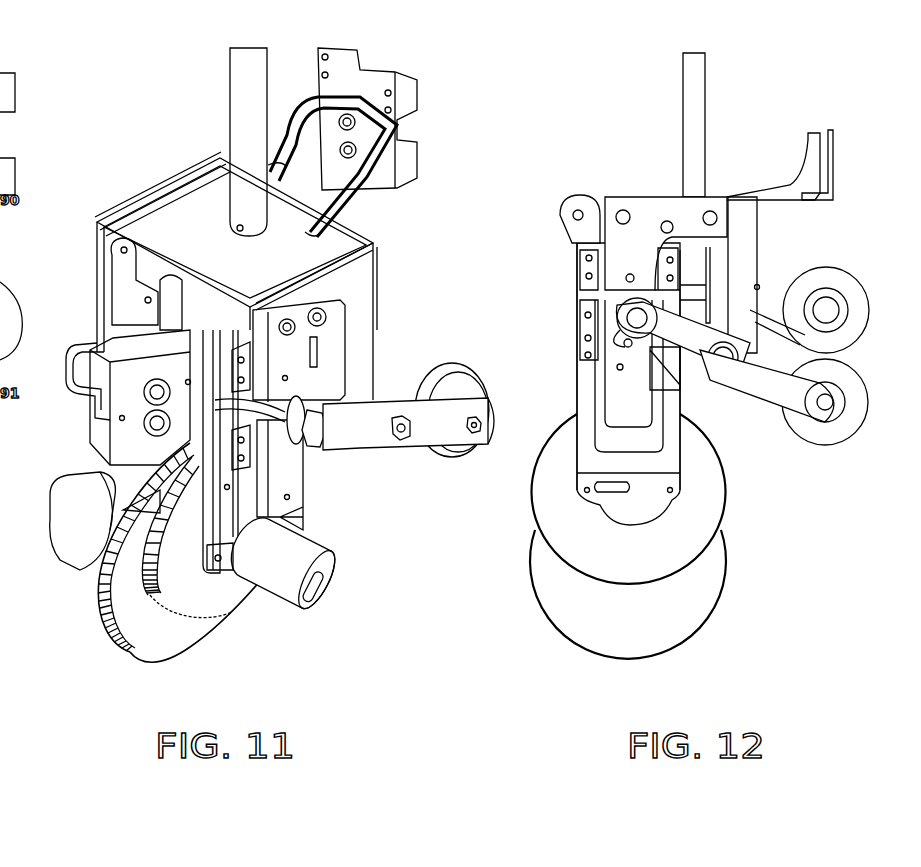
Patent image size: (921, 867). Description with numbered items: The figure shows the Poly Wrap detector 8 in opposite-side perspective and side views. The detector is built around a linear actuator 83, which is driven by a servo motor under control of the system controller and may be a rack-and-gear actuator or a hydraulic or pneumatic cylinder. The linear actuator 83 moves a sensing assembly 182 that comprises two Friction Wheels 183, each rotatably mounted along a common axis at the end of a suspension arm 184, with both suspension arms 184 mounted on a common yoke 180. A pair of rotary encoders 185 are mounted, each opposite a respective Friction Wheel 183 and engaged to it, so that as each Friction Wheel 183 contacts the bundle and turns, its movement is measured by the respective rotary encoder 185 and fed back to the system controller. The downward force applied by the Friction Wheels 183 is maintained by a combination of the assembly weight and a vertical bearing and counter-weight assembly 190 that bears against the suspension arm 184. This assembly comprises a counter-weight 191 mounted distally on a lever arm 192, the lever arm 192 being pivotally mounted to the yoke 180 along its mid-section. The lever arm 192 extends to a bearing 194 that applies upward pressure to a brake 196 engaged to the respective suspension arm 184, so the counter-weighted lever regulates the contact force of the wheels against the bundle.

In FIG. 11, the Poly Wrap detector 8 is at (165, 153).
In FIG. 12, the Poly Wrap detector 8 is at (585, 158).
In FIG. 11, the linear actuator 83 is at (235, 125).
In FIG. 12, the linear actuator 83 is at (683, 155).
In FIG. 11, the yoke 180 is at (221, 362).
In FIG. 12, the yoke 180 is at (696, 241).
In FIG. 11, the sensing assembly 182 is at (81, 653).
In FIG. 12, the sensing assembly 182 is at (527, 629).
In FIG. 11, the Friction Wheel 183 is at (100, 600).
In FIG. 12, the Friction Wheel 183 is at (705, 497).
In FIG. 11, the suspension arm 184 is at (92, 433).
In FIG. 12, the suspension arm 184 is at (578, 392).
In FIG. 11, the rotary encoder 185 is at (50, 517).
In FIG. 12, the rotary encoder 185 is at (655, 473).
In FIG. 11, the vertical bearing and counter-weight assembly 190 is at (480, 364).
In FIG. 12, the vertical bearing and counter-weight assembly 190 is at (868, 265).
In FIG. 11, the counter-weight 191 is at (453, 363).
In FIG. 12, the counter-weight 191 is at (836, 270).
In FIG. 12, the lever arm 192 is at (788, 335).
In FIG. 11, the bearing 194 is at (308, 448).
In FIG. 11, the brake 196 is at (320, 375).
In FIG. 12, the brake 196 is at (620, 367).